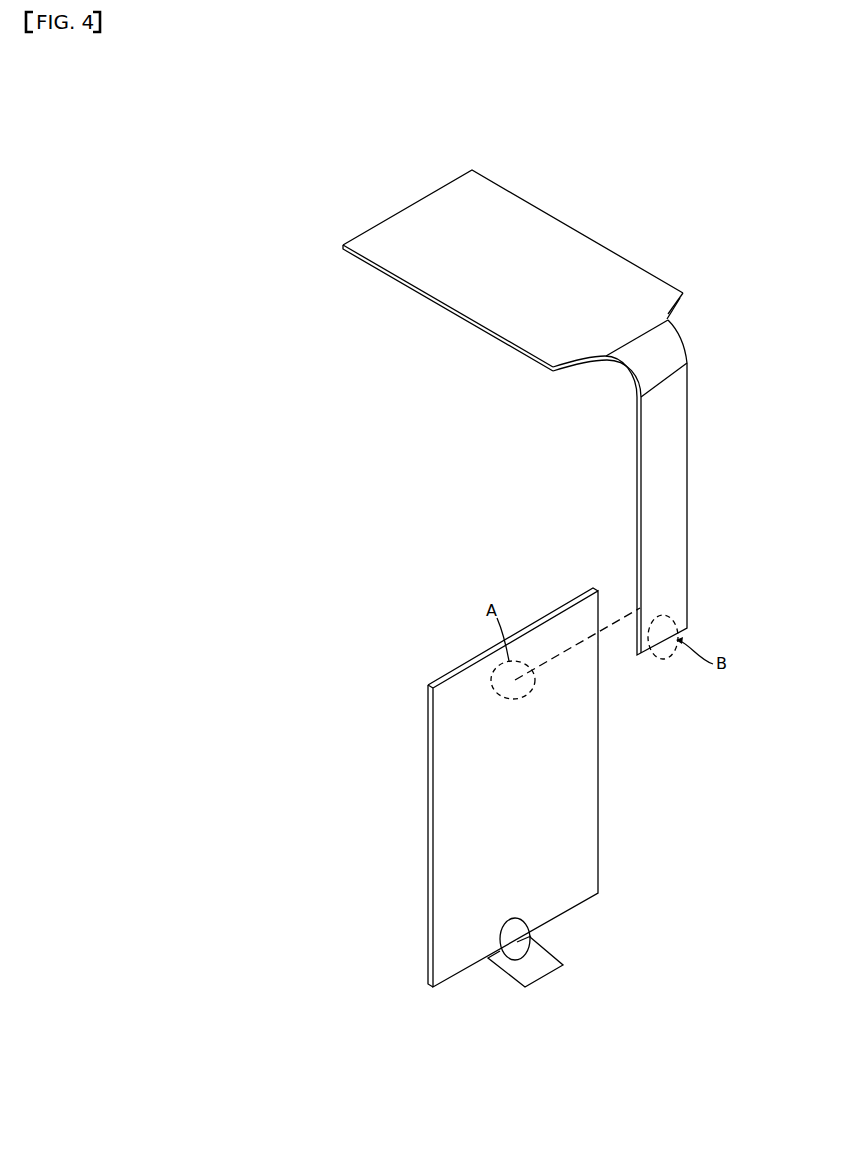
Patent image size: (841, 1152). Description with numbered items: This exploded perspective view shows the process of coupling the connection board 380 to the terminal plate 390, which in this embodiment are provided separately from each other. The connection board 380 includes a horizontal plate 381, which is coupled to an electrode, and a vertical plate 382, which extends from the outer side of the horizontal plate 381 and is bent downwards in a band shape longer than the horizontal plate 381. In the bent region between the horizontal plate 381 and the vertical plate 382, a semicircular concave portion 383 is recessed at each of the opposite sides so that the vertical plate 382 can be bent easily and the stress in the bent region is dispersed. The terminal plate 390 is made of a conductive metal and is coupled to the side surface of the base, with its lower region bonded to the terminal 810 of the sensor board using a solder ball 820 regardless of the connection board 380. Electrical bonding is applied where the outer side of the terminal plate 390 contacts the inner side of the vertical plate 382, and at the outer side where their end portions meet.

The connection board 380 is at (398, 184).
The horizontal plate 381 is at (562, 234).
The vertical plate 382 is at (668, 518).
The concave portion 383 is at (678, 343).
The terminal plate 390 is at (443, 798).
The solder ball 820 is at (500, 939).
The terminal 810 is at (538, 958).